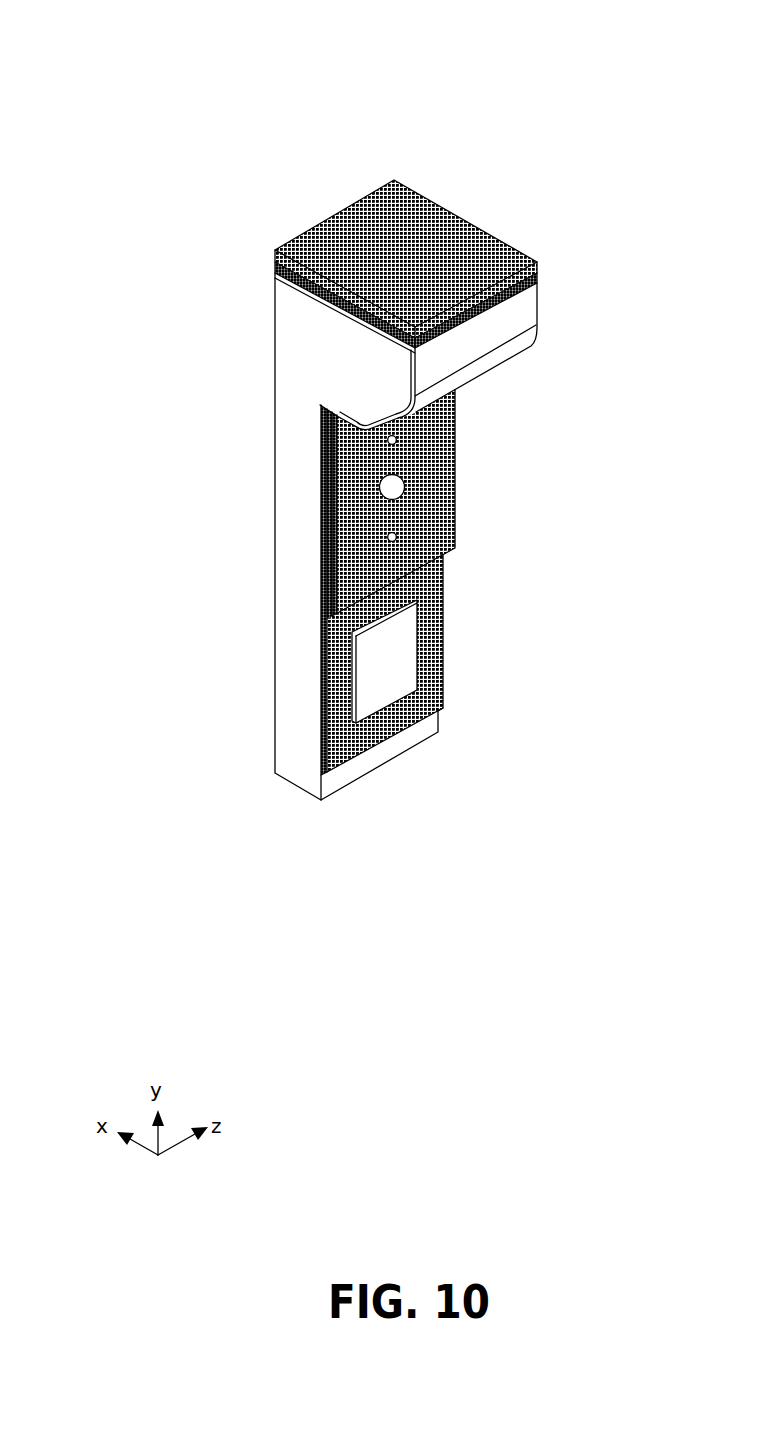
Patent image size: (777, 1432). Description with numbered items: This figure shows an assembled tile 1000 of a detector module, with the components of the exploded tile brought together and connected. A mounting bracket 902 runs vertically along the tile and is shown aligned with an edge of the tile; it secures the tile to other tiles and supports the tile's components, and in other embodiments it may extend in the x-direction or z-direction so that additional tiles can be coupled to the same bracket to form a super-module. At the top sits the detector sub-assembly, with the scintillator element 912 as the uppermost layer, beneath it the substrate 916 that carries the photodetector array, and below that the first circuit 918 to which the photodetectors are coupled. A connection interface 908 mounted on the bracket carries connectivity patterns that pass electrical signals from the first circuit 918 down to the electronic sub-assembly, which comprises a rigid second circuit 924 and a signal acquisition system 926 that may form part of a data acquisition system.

The assembled tile 1000 is at (120, 36).
The mounting bracket 902 is at (275, 442).
The connection interface 908 is at (325, 508).
The scintillator element 912 is at (477, 228).
The substrate 916 is at (537, 274).
The first circuit 918 is at (537, 308).
The second circuit 924 is at (320, 697).
The signal acquisition system 926 is at (419, 648).